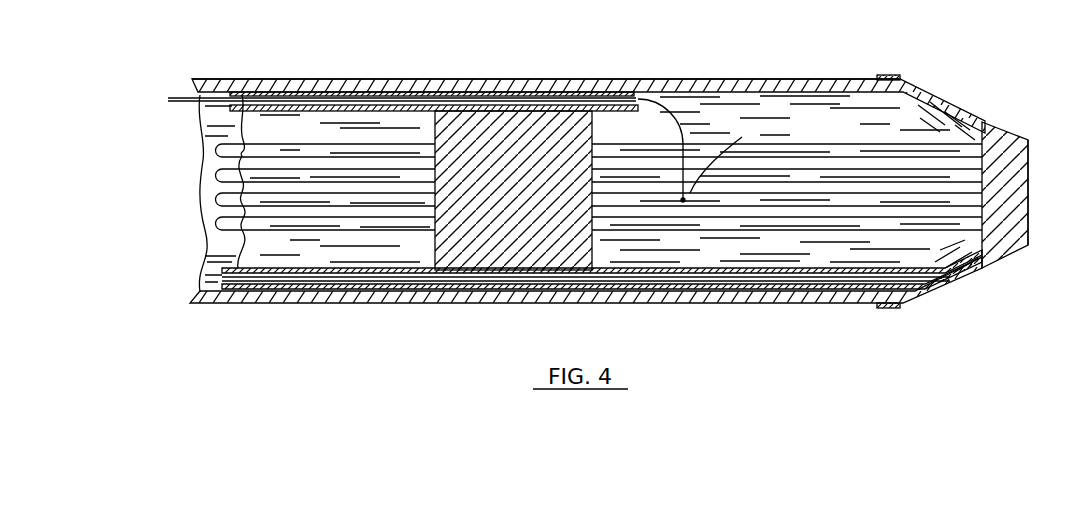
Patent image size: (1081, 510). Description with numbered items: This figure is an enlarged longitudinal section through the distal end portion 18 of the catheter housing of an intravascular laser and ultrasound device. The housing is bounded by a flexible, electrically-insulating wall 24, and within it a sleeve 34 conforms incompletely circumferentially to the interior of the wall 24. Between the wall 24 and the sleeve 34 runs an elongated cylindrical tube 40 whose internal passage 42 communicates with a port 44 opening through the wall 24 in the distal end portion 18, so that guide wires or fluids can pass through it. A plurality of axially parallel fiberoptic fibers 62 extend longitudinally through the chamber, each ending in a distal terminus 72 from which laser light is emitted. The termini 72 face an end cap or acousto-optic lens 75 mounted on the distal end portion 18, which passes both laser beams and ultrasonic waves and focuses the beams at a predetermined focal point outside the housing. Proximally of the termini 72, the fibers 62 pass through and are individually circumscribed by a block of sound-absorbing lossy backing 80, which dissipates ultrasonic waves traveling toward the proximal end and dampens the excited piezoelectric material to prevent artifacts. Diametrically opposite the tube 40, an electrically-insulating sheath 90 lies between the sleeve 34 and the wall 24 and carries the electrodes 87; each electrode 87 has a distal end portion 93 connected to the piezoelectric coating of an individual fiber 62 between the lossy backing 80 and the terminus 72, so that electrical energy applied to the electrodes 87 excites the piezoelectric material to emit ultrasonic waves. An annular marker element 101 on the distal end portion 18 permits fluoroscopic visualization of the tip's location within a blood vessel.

The distal end portion 18 is at (580, 83).
The wall 24 is at (498, 85).
The sleeve 34 is at (265, 117).
The tube 40 is at (293, 289).
The internal passage 42 is at (235, 278).
The port 44 is at (935, 283).
The fiberoptic fibers 62 is at (800, 226).
The distal terminus 72 is at (985, 178).
The acousto-optic lens 75 is at (1028, 220).
The lossy backing 80 is at (492, 258).
The electrodes 87 is at (693, 176).
The electrically-insulating sheath 90 is at (285, 87).
The distal end portion 93 is at (692, 190).
The annular marker element 101 is at (883, 78).